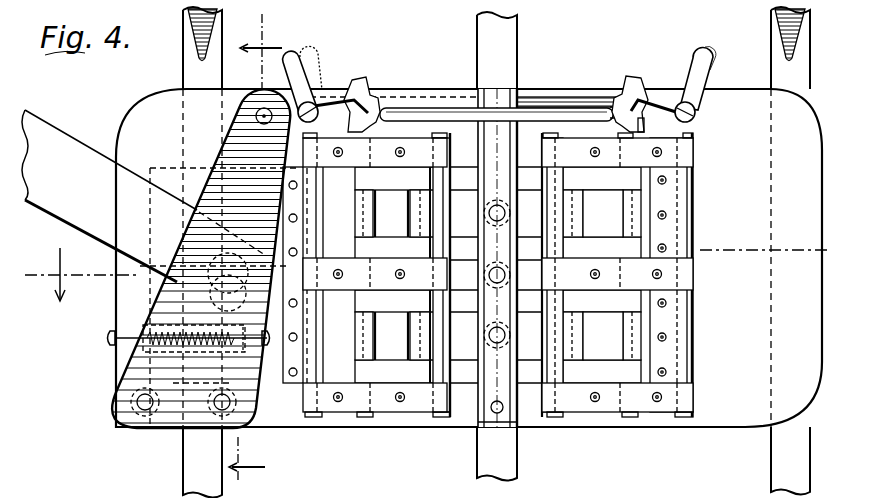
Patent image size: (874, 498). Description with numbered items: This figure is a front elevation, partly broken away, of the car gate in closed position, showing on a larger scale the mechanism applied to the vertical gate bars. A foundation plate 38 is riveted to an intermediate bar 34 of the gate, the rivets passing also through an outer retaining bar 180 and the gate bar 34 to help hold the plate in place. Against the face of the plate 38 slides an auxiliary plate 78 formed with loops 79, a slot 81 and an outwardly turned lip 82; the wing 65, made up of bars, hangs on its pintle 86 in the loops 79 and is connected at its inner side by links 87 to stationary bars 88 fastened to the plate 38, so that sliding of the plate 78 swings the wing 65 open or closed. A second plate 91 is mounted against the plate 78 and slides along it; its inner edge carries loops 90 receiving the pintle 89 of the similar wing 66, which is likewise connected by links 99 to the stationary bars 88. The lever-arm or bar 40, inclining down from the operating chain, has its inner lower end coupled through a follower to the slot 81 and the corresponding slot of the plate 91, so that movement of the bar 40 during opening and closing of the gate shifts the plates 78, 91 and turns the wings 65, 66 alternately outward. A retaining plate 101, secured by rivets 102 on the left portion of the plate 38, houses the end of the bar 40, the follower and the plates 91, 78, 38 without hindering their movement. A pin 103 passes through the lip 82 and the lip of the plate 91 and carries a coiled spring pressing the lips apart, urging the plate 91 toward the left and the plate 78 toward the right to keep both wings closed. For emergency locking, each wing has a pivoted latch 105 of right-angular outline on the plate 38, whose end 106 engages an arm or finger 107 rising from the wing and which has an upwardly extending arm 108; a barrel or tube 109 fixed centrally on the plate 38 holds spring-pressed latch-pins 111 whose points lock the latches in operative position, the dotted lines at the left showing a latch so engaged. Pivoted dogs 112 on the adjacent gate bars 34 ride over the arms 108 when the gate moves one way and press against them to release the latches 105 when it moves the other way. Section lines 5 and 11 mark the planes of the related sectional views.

The section line 5- 5 is at (425, 266).
The section line 11- 11 is at (259, 253).
The intermediate bar 34 is at (221, 27).
The plate 38 is at (469, 258).
The lever-arm or bar 40 is at (143, 196).
The wing 65 is at (553, 418).
The wing 66 is at (440, 418).
The auxiliary plate 78 is at (612, 212).
The loops 79 is at (690, 222).
The slot 81 is at (293, 238).
The lip 82 is at (247, 353).
The pintle 86 is at (680, 418).
The links 87 is at (602, 275).
The stationary bars 88 is at (511, 261).
The pintle 89 is at (313, 418).
The loops 90 is at (314, 194).
The plate 91 is at (173, 146).
The links 99 is at (392, 275).
The retaining plate 101 is at (132, 373).
The rivets 102 is at (254, 116).
The pin 103 is at (108, 338).
The pivoted latch 105 is at (315, 98).
The end of latch 106 is at (372, 100).
The arm or finger 107 is at (356, 102).
The upwardly extending arm 108 is at (709, 58).
The barrel or tube 109 is at (528, 104).
The latch-pin 111 is at (390, 110).
The pivoted dogs 112 is at (196, 48).
The outer retaining bar 180 is at (495, 424).